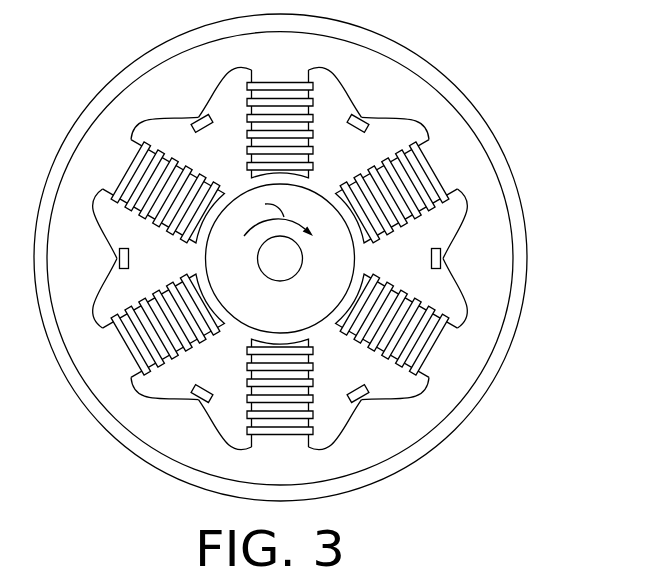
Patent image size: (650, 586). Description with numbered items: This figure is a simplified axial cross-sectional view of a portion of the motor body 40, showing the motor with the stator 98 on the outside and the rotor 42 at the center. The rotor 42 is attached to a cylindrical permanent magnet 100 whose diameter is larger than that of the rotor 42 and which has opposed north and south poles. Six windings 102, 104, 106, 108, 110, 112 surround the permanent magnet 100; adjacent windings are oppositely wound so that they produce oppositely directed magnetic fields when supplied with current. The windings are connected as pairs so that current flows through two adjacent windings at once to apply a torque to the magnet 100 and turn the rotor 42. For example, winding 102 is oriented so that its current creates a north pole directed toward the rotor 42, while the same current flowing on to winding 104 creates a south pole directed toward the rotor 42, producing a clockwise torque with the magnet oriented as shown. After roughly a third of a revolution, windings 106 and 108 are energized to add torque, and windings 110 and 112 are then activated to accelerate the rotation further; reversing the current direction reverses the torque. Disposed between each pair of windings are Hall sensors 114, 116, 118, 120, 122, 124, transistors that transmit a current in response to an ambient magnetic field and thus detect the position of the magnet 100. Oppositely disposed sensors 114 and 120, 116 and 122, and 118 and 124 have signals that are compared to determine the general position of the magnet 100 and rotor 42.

The motor body 40 is at (528, 248).
The rotor 42 is at (279, 282).
The stator 98 is at (512, 206).
The permanent magnet 100 is at (206, 258).
The winding 102 is at (433, 160).
The winding 104 is at (440, 343).
The winding 106 is at (280, 435).
The winding 108 is at (127, 362).
The winding 110 is at (118, 161).
The winding 112 is at (280, 82).
The Hall sensor 114 is at (441, 258).
The Hall sensor 116 is at (360, 398).
The Hall sensor 118 is at (197, 398).
The Hall sensor 120 is at (119, 258).
The Hall sensor 122 is at (196, 116).
The Hall sensor 124 is at (354, 119).